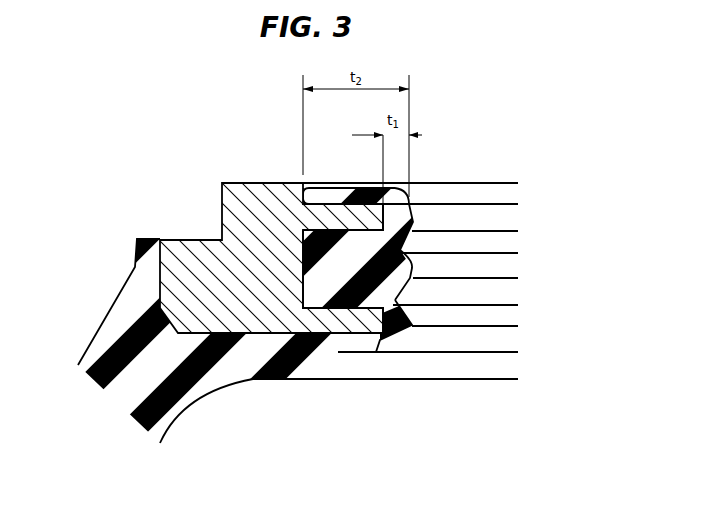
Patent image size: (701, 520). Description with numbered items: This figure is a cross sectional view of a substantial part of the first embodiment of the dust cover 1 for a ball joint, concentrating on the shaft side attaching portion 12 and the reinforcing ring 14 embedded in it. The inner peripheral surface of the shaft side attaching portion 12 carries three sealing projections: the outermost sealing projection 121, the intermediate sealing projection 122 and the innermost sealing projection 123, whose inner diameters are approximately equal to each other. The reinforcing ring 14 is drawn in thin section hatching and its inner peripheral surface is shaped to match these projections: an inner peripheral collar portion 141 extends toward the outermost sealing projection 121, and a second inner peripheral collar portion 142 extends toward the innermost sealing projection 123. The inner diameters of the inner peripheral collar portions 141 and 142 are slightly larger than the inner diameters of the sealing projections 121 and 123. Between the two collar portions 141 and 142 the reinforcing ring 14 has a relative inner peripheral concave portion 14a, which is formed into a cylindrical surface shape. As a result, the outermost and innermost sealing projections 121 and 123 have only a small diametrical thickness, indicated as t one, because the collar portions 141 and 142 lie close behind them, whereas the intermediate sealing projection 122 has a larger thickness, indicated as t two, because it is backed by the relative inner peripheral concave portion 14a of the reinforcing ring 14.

The dust cover 1 is at (350, 260).
The shaft side attaching portion 12 is at (323, 260).
The outermost sealing projection 121 is at (405, 222).
The intermediate sealing projection 122 is at (411, 271).
The innermost sealing projection 123 is at (417, 333).
The reinforcing ring 14 is at (350, 260).
The inner peripheral collar portion 141 is at (333, 213).
The inner peripheral collar portion 142 is at (350, 323).
The relative inner peripheral concave portion 14a is at (328, 312).